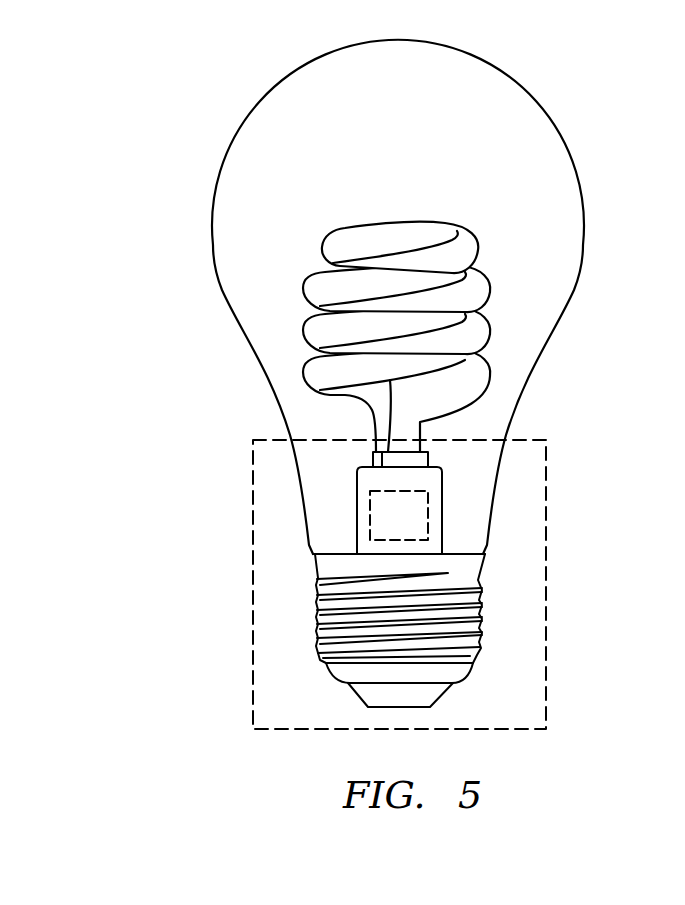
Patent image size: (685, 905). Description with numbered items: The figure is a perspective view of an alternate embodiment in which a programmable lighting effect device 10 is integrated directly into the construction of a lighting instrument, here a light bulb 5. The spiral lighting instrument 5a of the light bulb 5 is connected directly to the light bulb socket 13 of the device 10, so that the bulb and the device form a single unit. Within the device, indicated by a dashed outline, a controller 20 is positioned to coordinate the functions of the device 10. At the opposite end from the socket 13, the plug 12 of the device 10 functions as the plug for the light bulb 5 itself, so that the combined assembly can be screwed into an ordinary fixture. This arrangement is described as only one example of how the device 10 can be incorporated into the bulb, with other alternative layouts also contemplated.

The light bulb 5 is at (541, 99).
The lighting instrument 5a is at (364, 225).
The light bulb socket 13 is at (420, 462).
The controller 20 is at (405, 517).
The plug 12 is at (453, 652).
The programmable lighting effect device 10 is at (253, 515).